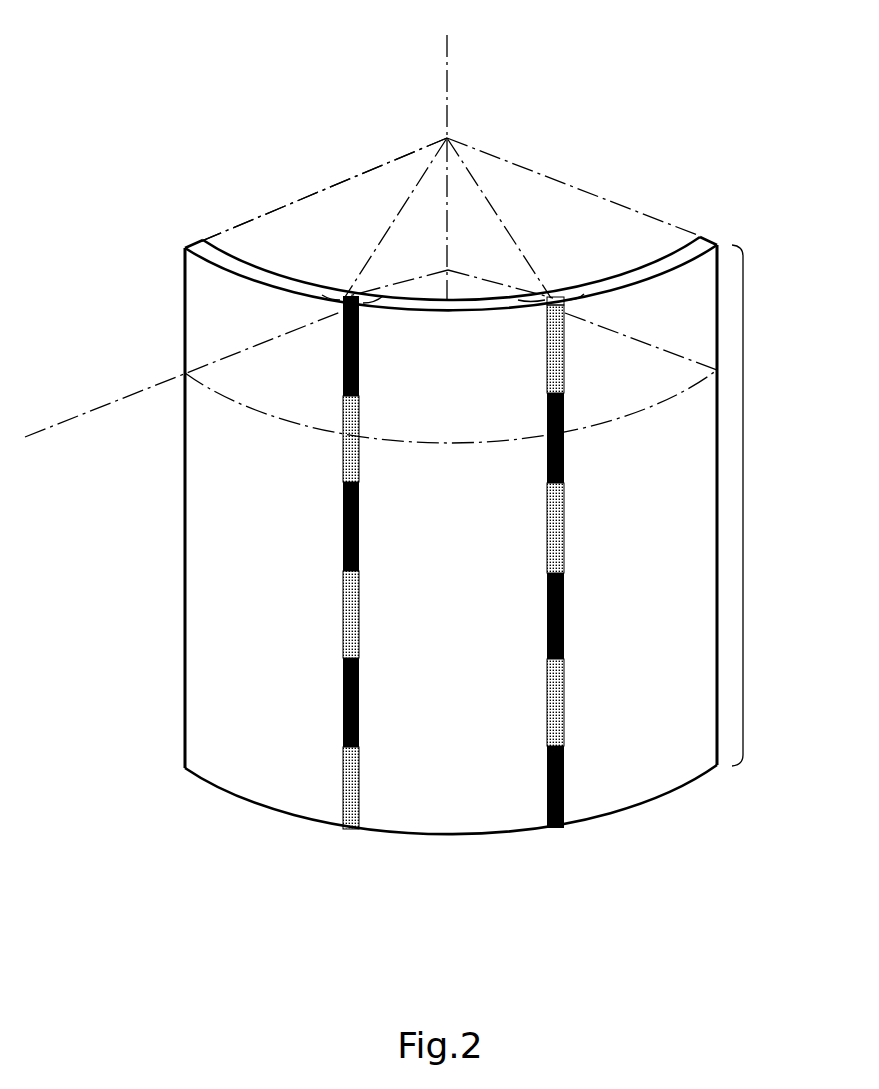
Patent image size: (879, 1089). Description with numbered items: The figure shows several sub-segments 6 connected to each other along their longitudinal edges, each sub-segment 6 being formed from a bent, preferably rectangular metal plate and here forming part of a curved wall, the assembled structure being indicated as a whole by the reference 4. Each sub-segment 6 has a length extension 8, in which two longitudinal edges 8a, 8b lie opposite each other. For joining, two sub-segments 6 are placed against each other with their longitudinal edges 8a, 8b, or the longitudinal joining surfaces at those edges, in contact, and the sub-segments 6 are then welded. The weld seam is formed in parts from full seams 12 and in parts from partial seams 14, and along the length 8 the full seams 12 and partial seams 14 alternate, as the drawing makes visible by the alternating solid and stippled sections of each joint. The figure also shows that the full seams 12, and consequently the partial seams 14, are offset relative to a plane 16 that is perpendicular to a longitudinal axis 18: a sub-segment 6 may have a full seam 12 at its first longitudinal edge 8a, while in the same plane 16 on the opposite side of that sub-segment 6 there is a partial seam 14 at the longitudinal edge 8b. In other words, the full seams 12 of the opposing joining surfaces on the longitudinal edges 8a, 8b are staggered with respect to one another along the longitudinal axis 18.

The cylindrical shell segment / housing 4 is at (283, 205).
The sub-segment 6 is at (245, 757).
The length extension 8 is at (753, 505).
The first longitudinal edge 8a is at (717, 309).
The second longitudinal edge 8b is at (186, 290).
The full seam 12 is at (343, 358).
The partial seam 14 is at (343, 458).
The plane 16 is at (97, 408).
The longitudinal axis 18 is at (447, 54).